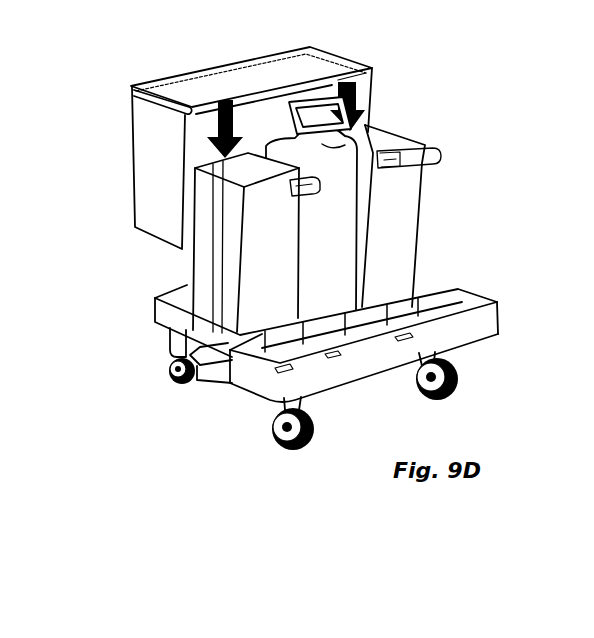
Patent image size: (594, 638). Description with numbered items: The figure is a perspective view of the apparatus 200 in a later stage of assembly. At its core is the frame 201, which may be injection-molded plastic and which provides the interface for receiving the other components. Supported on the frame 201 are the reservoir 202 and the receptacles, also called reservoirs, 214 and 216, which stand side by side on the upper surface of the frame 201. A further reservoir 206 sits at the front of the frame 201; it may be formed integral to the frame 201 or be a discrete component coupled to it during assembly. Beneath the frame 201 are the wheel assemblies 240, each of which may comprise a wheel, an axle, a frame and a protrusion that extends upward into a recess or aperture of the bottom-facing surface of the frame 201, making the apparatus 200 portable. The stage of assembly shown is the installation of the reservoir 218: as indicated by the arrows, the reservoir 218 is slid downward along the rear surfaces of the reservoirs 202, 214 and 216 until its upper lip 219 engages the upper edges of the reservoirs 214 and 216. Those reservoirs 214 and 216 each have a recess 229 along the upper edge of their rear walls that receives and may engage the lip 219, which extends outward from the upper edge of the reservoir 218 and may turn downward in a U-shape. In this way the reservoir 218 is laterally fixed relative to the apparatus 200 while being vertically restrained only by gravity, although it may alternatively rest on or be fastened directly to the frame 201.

The apparatus 200 is at (298, 241).
The frame 201 is at (150, 307).
The reservoir 202 is at (340, 257).
The reservoir 206 is at (438, 318).
The receptacle 214 is at (205, 277).
The receptacle 216 is at (415, 207).
The reservoir 218 is at (233, 138).
The upper lip 219 is at (188, 105).
The recess 229 is at (225, 167).
The wheel assembly 240 is at (172, 368).